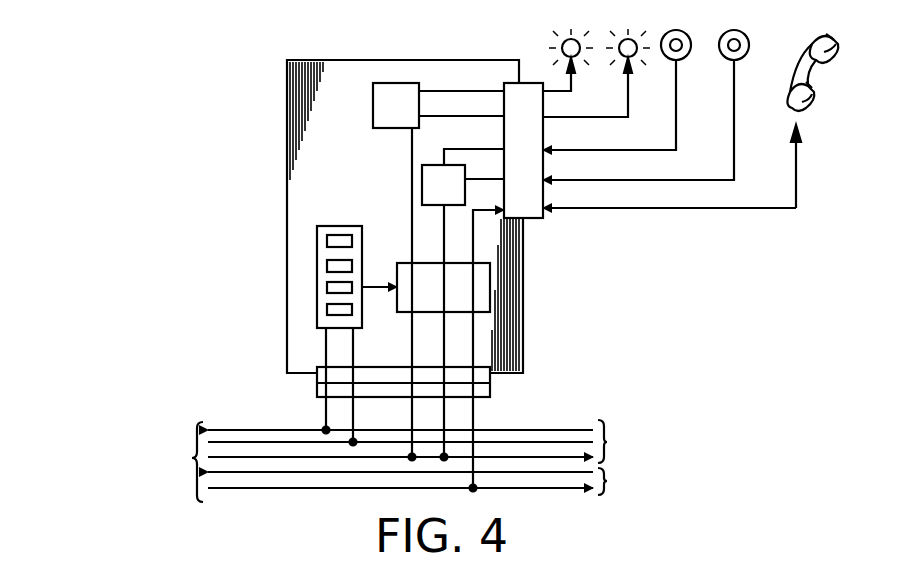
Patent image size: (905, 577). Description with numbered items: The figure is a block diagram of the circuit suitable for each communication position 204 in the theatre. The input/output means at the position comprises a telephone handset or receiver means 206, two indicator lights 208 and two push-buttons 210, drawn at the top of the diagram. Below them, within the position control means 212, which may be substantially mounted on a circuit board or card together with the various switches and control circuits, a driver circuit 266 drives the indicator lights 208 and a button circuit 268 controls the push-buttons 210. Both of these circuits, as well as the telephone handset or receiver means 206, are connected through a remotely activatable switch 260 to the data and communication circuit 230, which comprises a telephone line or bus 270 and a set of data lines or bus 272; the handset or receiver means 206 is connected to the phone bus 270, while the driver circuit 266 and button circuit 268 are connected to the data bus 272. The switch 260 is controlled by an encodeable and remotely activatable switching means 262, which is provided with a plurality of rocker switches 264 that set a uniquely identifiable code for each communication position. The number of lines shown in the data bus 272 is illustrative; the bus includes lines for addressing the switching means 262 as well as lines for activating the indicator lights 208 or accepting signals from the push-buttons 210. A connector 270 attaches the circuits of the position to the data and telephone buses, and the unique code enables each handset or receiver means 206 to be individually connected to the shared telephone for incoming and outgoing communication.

The communication position 204 is at (265, 163).
The telephone handset or receiver means 206 is at (800, 58).
The indicator lights 208 is at (622, 40).
The push-buttons 210 is at (734, 30).
The position control means 212 is at (346, 205).
The data and communication circuit 230 is at (112, 463).
The remotely activatable switch 260 is at (490, 288).
The encodeable and remotely activatable switching means 262 is at (317, 252).
The rocker switches 264 is at (317, 283).
The driver circuit 266 is at (373, 107).
The button circuit 268 is at (422, 180).
The telephone line or bus 270 is at (317, 383).
The data lines or bus 272 is at (648, 451).